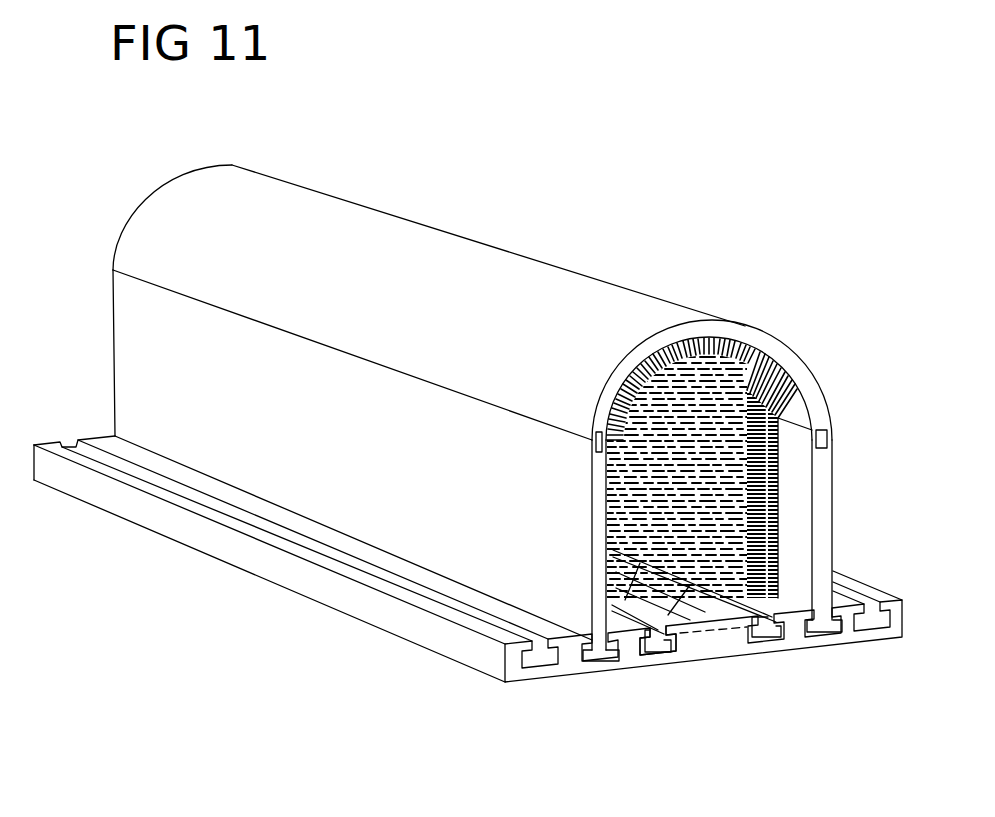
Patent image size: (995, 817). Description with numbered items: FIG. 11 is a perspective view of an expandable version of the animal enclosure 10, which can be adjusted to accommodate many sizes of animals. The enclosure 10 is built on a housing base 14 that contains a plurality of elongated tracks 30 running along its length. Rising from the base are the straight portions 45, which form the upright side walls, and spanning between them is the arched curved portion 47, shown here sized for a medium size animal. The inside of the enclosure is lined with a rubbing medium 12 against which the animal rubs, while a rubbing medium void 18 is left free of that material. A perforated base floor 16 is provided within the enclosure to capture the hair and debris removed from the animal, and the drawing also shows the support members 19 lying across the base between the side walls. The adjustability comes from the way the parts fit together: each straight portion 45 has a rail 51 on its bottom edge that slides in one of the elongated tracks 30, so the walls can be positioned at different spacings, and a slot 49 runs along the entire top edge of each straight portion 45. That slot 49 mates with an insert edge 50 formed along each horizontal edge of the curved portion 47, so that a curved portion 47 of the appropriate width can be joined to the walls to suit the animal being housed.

The animal enclosure 10 is at (577, 122).
The curved portion 47 is at (637, 292).
The rubbing medium 12 is at (727, 358).
The insert edge 50 is at (596, 438).
The slot 49 is at (593, 447).
The rubbing medium void 18 is at (795, 470).
The straight portion 45 is at (830, 528).
The housing base 14 is at (480, 652).
The rail 51 is at (602, 650).
The elongated track 30 is at (650, 647).
The rail 19 is at (692, 620).
The perforated base floor 16 is at (780, 606).